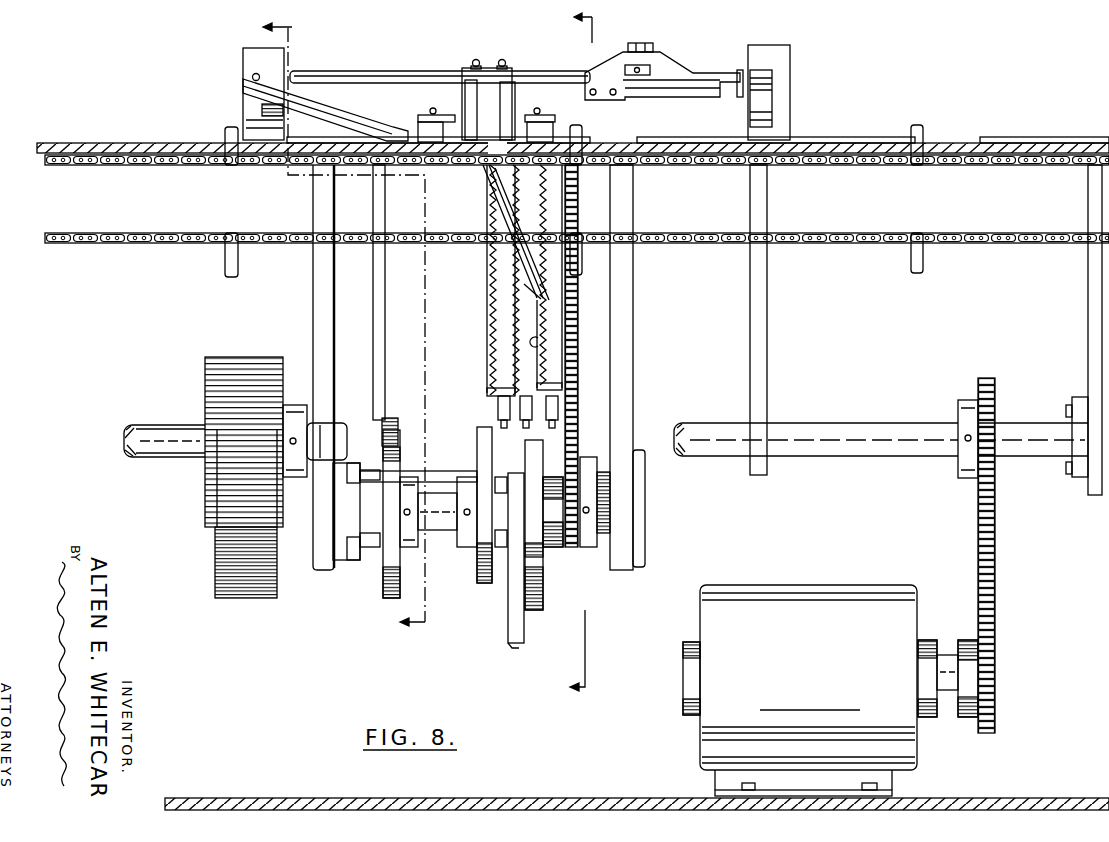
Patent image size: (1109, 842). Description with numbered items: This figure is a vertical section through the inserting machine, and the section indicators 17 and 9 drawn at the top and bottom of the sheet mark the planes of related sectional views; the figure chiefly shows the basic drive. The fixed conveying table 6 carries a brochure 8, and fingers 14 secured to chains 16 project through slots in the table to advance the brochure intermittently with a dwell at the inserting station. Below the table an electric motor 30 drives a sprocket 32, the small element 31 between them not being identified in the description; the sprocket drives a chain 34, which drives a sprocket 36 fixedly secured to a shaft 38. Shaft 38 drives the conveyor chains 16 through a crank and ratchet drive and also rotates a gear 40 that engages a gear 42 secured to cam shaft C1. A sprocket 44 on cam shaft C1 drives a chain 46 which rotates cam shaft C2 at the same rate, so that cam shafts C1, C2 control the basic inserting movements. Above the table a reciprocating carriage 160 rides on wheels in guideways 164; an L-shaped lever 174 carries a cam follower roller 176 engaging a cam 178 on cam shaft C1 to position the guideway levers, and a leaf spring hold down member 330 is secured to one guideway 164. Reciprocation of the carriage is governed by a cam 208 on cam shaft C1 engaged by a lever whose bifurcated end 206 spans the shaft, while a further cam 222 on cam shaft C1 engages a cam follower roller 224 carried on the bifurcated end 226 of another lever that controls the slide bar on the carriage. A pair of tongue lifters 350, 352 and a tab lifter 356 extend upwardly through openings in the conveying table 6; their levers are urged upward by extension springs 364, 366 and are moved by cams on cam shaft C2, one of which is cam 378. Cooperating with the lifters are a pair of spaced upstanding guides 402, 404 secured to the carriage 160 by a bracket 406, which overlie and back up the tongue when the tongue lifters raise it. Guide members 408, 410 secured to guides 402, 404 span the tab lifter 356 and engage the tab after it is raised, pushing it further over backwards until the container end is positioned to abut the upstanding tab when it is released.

The conveying table 6 is at (84, 143).
The brochure 8 is at (135, 143).
The fingers 14 is at (226, 133).
The chains 16 is at (268, 233).
The guideways 164 is at (249, 65).
The leaf spring hold down member 330 is at (362, 116).
The reciprocating carriage 160 is at (419, 71).
The bracket 406 is at (486, 70).
The upstanding guide 402 is at (468, 128).
The guide member 408 is at (470, 128).
The guide member 410 is at (503, 117).
The upstanding guide 404 is at (497, 138).
The tongue lifter 352 is at (488, 260).
The extension spring 364 is at (488, 282).
The extension spring 366 is at (515, 310).
The cam 378 is at (552, 290).
The tongue lifter 350 is at (517, 322).
The tab lifter 356 is at (538, 342).
The chain 46 is at (577, 367).
The sprocket 44 is at (580, 446).
The L-shaped lever 174 is at (378, 344).
The cam follower roller 176 is at (390, 418).
The cam 178 is at (385, 568).
The cam shaft C1 is at (437, 503).
The cam shaft C2 is at (418, 478).
The cam 208 is at (478, 438).
The bifurcated end 206 is at (500, 538).
The bifurcated end 226 is at (518, 593).
The cam 222 is at (538, 548).
The cam follower roller 224 is at (532, 615).
The gear 40 is at (217, 399).
The shaft 38 is at (162, 457).
The gear 42 is at (218, 569).
The sprocket 36 is at (997, 408).
The chain 34 is at (996, 585).
The electric motor 30 is at (817, 646).
The sprocket 32 is at (997, 668).
The motor shaft 31 is at (948, 692).
The section line 17- 17 is at (331, 325).
The section line 9- 9 is at (575, 354).